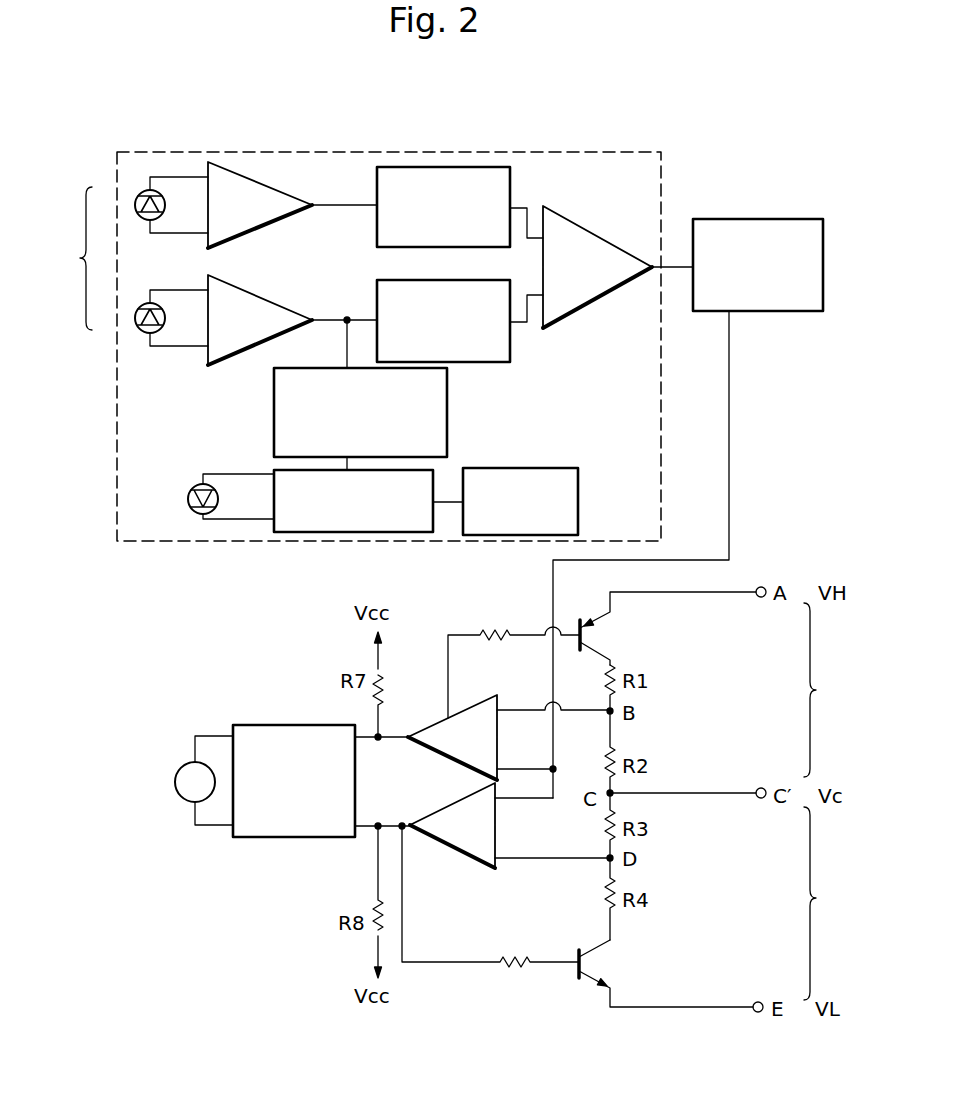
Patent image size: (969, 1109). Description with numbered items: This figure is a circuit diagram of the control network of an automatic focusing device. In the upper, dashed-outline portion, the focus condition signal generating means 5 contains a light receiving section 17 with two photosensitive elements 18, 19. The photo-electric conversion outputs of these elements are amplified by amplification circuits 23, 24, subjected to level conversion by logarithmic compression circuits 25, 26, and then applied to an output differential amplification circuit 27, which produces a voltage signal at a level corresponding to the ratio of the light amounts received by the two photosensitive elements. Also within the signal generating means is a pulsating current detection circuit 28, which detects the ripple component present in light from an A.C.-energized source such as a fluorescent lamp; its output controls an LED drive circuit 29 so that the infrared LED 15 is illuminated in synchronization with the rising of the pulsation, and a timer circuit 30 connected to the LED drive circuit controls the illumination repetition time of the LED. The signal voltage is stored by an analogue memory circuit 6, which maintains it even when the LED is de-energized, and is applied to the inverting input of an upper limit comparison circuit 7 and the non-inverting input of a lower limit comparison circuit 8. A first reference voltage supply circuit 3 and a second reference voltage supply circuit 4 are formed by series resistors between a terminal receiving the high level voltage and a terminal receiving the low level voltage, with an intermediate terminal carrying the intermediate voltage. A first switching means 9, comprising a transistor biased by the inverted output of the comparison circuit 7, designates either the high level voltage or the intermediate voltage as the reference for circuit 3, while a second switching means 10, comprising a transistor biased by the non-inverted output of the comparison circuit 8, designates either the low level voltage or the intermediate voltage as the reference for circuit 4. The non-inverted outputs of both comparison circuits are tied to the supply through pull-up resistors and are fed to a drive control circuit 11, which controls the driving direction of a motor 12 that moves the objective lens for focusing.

The first reference voltage supply circuit 3 is at (820, 690).
The second reference voltage supply circuit 4 is at (820, 903).
The focus condition signal generating means 5 is at (392, 152).
The analogue memory circuit 6 is at (790, 219).
The upper limit comparison circuit 7 is at (435, 757).
The lower limit comparison circuit 8 is at (458, 858).
The first switching means 9 is at (585, 619).
The second switching means 10 is at (583, 940).
The drive control circuit 11 is at (285, 837).
The motor 12 is at (182, 797).
The infrared LED 15 is at (188, 499).
The light receiving section 17 is at (74, 258).
The photosensitive element 18 is at (134, 205).
The photosensitive element 19 is at (134, 318).
The amplification circuit 23 is at (250, 178).
The amplification circuit 24 is at (243, 357).
The logarithmic compression circuit 25 is at (455, 167).
The logarithmic compression circuit 26 is at (480, 362).
The output differential amplification circuit 27 is at (578, 225).
The pulsating current detection circuit 28 is at (274, 428).
The LED drive circuit 29 is at (292, 532).
The timer circuit 30 is at (550, 468).